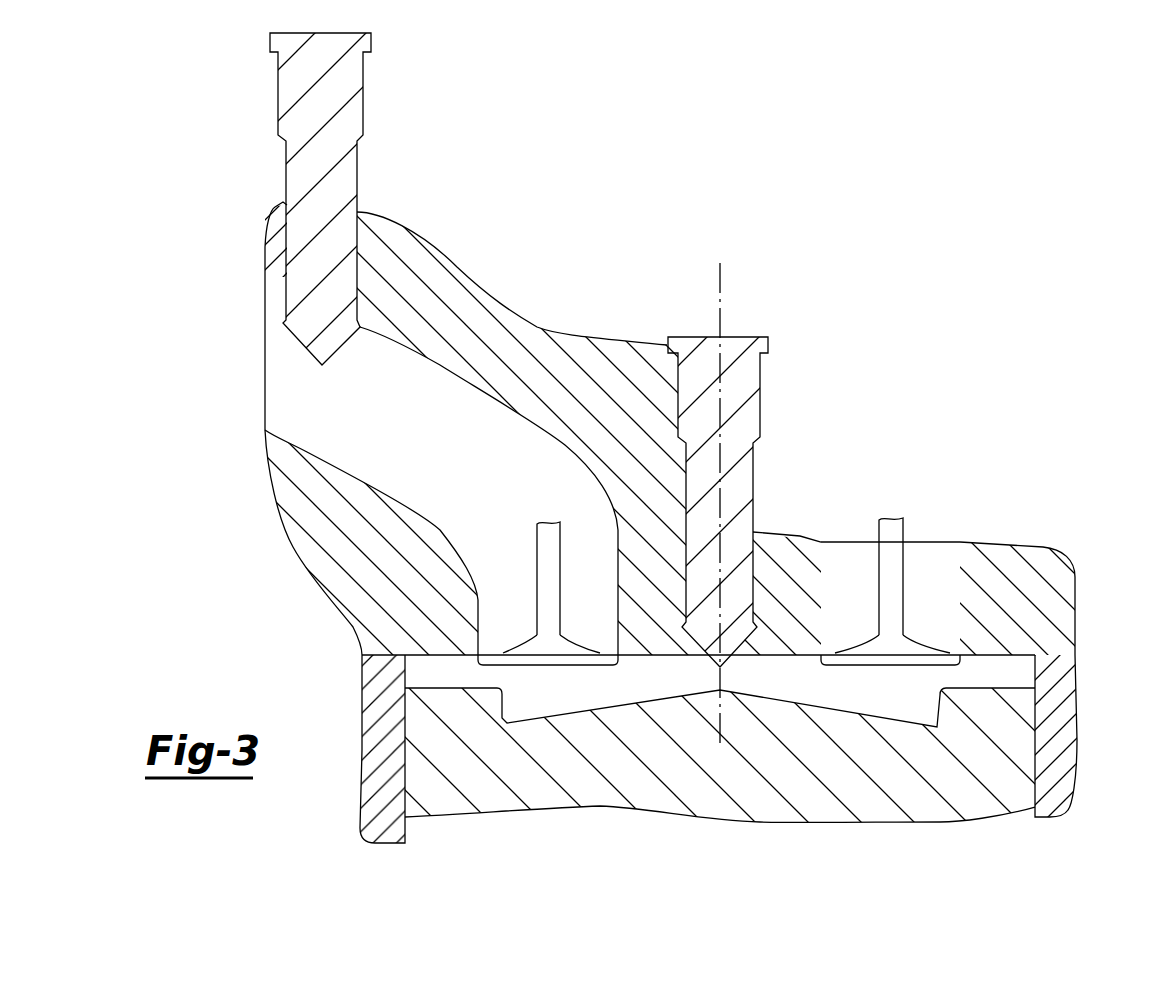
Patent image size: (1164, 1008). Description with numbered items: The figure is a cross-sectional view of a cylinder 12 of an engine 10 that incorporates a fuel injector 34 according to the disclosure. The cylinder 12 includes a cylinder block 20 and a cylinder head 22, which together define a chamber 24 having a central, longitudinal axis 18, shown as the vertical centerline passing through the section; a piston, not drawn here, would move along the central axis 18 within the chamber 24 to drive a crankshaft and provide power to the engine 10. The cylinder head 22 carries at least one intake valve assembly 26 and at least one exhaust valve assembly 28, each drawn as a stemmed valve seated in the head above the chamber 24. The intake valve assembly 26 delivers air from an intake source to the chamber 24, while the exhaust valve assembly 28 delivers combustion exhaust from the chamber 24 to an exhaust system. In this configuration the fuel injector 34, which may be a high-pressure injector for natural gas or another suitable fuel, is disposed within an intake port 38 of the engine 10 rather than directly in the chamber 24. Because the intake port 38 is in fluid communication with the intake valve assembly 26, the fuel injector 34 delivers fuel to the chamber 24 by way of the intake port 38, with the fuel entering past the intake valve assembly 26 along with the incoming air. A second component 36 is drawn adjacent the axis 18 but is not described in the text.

The engine 10 is at (1082, 720).
The cylinder 12 is at (328, 673).
The central longitudinal axis 18 is at (722, 413).
The cylinder block 20 is at (1052, 805).
The cylinder head 22 is at (1007, 572).
The chamber 24 is at (558, 704).
The intake valve assembly 26 is at (505, 660).
The exhaust valve assembly 28 is at (862, 667).
The fuel injector 34 is at (378, 96).
The second fuel injector / spark plug 36 is at (777, 372).
The intake port 38 is at (455, 377).